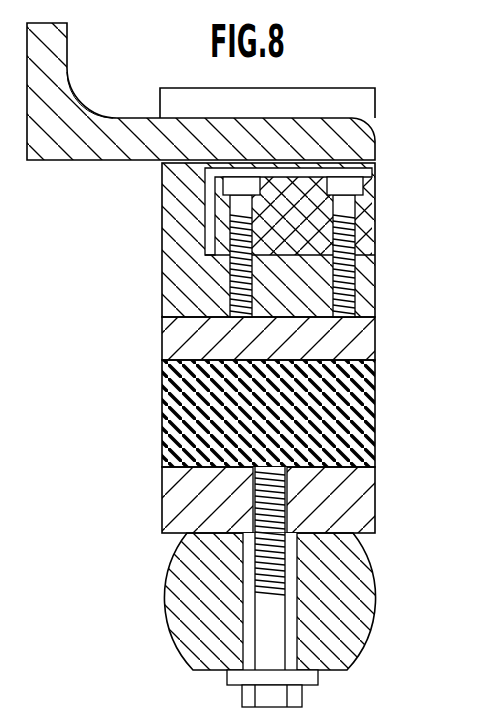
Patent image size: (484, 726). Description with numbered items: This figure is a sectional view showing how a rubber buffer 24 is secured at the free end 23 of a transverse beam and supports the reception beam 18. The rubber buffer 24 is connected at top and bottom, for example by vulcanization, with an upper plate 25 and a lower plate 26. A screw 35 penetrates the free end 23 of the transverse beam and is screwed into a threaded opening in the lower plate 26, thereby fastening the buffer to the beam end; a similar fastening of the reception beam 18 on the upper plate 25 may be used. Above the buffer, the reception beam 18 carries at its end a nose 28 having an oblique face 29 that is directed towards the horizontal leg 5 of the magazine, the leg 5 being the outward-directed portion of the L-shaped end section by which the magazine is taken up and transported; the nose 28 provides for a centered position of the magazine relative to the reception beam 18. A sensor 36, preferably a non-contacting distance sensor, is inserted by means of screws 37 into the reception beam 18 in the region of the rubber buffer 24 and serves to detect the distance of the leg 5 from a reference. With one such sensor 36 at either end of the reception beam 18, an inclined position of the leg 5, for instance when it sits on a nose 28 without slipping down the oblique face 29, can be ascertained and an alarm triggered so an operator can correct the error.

The horizontal leg 5 is at (142, 135).
The nose 28 is at (306, 106).
The oblique face 29 is at (355, 112).
The reception beam 18 is at (266, 240).
The sensor 36 is at (313, 206).
The screw 37 is at (335, 253).
The upper plate 25 is at (350, 343).
The rubber buffer 24 is at (332, 425).
The lower plate 26 is at (340, 500).
The free end 23 is at (195, 560).
The screw 35 is at (265, 632).